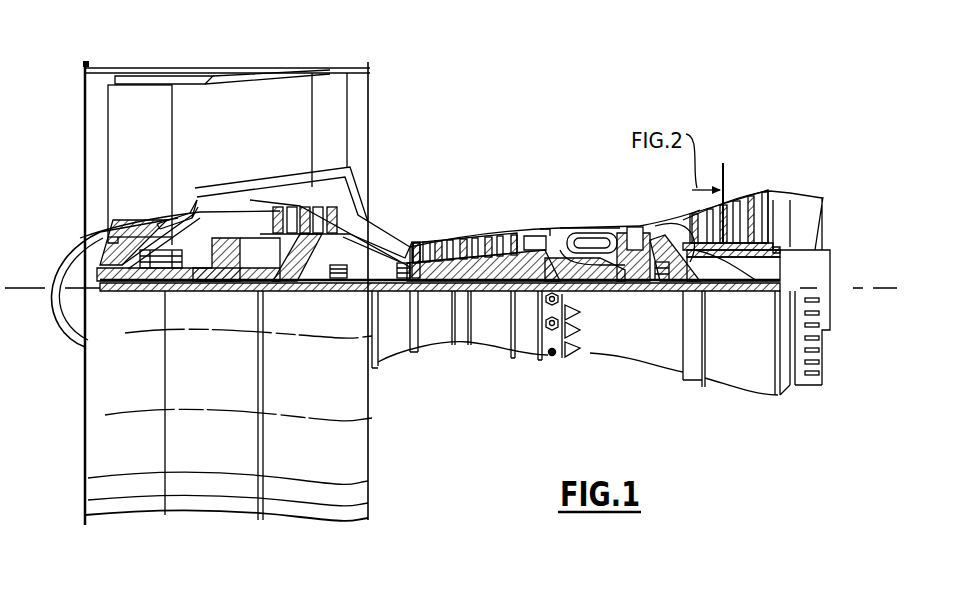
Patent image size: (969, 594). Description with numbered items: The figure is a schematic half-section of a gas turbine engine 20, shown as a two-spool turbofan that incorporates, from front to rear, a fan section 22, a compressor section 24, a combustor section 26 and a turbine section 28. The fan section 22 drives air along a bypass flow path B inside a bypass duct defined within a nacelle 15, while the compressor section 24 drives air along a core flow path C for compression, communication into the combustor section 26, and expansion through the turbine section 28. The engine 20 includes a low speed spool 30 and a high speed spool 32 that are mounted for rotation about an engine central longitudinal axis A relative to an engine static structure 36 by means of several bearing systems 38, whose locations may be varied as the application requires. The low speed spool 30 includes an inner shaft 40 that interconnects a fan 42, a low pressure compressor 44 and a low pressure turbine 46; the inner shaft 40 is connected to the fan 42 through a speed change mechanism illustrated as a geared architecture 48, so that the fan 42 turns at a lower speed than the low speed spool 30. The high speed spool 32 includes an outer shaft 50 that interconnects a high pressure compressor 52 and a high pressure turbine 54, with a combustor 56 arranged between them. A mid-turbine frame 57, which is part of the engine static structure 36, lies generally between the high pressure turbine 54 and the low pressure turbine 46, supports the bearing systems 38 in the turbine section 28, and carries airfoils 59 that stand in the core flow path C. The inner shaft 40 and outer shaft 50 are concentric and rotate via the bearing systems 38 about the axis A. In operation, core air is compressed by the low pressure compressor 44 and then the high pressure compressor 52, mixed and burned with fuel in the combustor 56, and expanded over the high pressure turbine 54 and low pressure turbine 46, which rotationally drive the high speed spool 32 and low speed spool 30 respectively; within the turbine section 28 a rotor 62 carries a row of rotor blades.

The gas turbine engine 20 is at (592, 103).
The fan section 22 is at (172, 62).
The compressor section 24 is at (407, 210).
The combustor section 26 is at (583, 207).
The turbine section 28 is at (710, 167).
The nacelle 15 is at (227, 68).
The low speed spool 30 is at (493, 300).
The high speed spool 32 is at (527, 253).
The engine static structure 36 is at (527, 368).
The bearing systems 38 is at (338, 284).
The inner shaft 40 is at (392, 355).
The fan 42 is at (127, 169).
The low pressure compressor 44 is at (312, 222).
The low pressure turbine 46 is at (734, 195).
The geared architecture 48 is at (230, 282).
The outer shaft 50 is at (590, 287).
The high pressure compressor 52 is at (470, 242).
The high pressure turbine 54 is at (636, 230).
The combustor 56 is at (582, 240).
The mid-turbine frame 57 is at (668, 216).
The airfoils 59 is at (699, 265).
The rotor 62 is at (757, 292).
The engine central longitudinal axis A is at (893, 288).
The bypass flow path B is at (202, 125).
The core flow path C is at (232, 206).